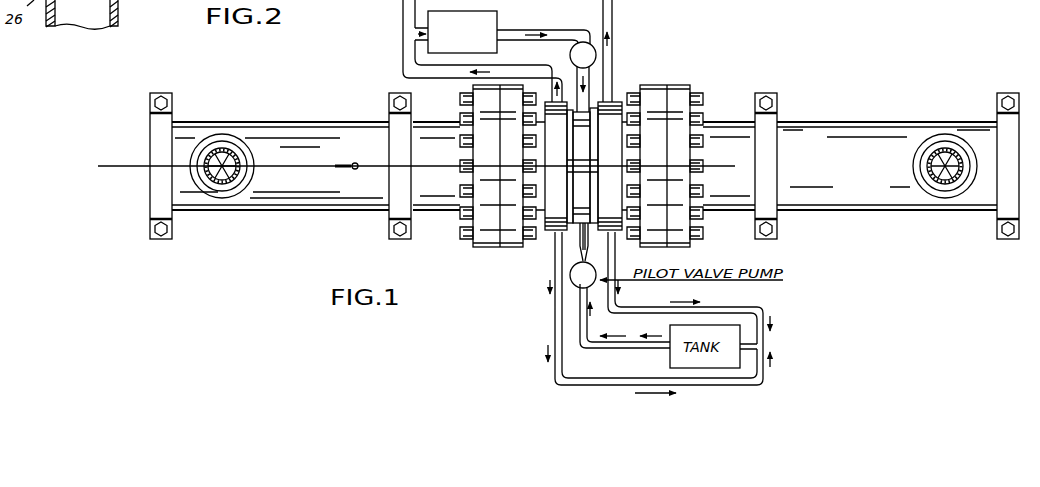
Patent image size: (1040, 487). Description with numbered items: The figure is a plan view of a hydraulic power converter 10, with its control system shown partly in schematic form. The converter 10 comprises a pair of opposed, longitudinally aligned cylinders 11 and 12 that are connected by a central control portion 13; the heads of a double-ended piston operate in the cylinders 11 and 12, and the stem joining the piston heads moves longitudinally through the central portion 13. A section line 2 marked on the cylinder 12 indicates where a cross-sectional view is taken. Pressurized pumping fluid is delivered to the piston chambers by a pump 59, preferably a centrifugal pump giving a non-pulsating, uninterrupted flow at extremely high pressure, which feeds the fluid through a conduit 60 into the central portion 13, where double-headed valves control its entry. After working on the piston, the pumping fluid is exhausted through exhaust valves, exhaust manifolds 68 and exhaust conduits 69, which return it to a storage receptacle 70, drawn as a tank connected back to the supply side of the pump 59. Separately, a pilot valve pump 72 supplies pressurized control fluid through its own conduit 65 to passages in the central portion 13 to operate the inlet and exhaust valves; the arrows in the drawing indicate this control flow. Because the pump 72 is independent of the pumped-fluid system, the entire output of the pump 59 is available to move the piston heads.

The section line 2- 2 is at (116, 170).
The hydraulic power converter 10 is at (695, 83).
The cylinder 11 is at (853, 128).
The cylinder 12 is at (263, 128).
The central control portion 13 is at (607, 101).
The pump 59 is at (570, 55).
The conduit 60 is at (591, 71).
The return conduit 65 is at (613, 15).
The exhaust manifold 68 is at (558, 150).
The exhaust conduit 69 is at (436, 79).
The storage receptacle 70 is at (498, 23).
The pump 72 is at (577, 290).